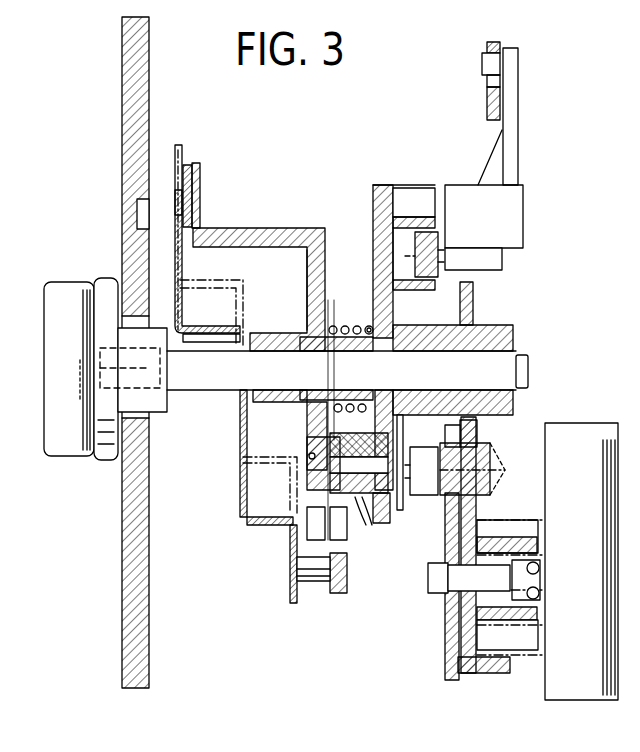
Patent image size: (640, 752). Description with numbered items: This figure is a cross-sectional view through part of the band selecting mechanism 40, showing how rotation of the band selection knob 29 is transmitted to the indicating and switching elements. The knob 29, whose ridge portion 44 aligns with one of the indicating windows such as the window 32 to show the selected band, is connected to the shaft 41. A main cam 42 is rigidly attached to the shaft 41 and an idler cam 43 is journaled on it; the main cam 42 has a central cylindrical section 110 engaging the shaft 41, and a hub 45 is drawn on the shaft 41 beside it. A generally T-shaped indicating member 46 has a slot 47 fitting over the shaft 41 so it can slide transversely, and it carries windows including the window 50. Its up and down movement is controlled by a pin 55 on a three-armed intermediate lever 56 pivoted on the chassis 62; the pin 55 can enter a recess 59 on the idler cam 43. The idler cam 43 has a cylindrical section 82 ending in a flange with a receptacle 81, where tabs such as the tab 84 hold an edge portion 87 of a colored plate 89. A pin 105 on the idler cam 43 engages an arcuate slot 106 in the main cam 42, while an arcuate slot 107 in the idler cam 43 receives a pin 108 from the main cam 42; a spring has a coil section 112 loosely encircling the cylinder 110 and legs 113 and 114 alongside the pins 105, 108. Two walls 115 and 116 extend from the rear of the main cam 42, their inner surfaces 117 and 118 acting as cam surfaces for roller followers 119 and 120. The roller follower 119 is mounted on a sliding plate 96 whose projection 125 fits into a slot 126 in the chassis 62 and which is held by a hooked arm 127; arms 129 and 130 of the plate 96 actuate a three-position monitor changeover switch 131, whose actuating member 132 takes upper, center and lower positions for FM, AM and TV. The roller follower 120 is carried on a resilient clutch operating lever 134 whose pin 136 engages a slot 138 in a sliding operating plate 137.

The band selection knob 29 is at (106, 285).
The indicating window 32 is at (136, 215).
The band selecting mechanism 40 is at (305, 189).
The shaft 41 is at (204, 374).
The main cam 42 is at (377, 196).
The idler cam 43 is at (318, 280).
The ridge portion 44 is at (62, 290).
The hub 45 is at (514, 337).
The indicating member 46 is at (243, 463).
The slot 47 is at (243, 433).
The window 50 is at (178, 266).
The pin 55 is at (297, 549).
The intermediate lever 56 is at (347, 570).
The recess 59 is at (308, 512).
The chassis 62 is at (475, 298).
The receptacle 81 is at (173, 176).
The cylindrical section 82 is at (270, 238).
The tab 84 is at (184, 166).
The edge portion 87 is at (200, 181).
The colored plate 89 is at (198, 210).
The sliding plate 96 is at (446, 646).
The pin 105 is at (340, 530).
The arcuate slot 106 is at (388, 512).
The arcuate slot 107 is at (310, 455).
The pin 108 is at (312, 440).
The central cylindrical section 110 is at (351, 324).
The coil section 112 is at (375, 333).
The leg 113 is at (367, 520).
The leg 114 is at (356, 403).
The wall 115 is at (398, 425).
The wall 116 is at (437, 222).
The inner surface 117 is at (401, 510).
The inner surface 118 is at (394, 232).
The roller follower 119 is at (462, 506).
The roller follower 120 is at (432, 241).
The projection 125 is at (497, 470).
The slot 126 is at (478, 433).
The arm 127 is at (436, 580).
The arm 129 is at (540, 523).
The arm 130 is at (507, 617).
The monitor changeover switch 131 is at (603, 424).
The actuating member 132 is at (541, 562).
The clutch operating lever 134 is at (503, 262).
The pin 136 is at (484, 62).
The sliding operating plate 137 is at (488, 106).
The slot 138 is at (488, 88).